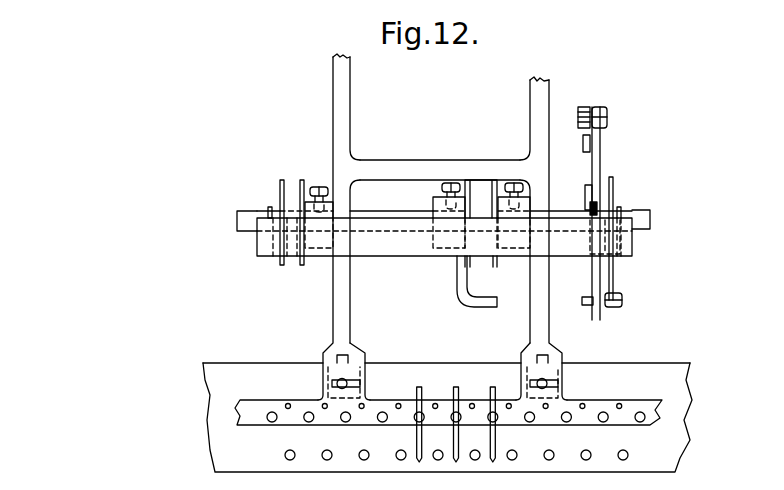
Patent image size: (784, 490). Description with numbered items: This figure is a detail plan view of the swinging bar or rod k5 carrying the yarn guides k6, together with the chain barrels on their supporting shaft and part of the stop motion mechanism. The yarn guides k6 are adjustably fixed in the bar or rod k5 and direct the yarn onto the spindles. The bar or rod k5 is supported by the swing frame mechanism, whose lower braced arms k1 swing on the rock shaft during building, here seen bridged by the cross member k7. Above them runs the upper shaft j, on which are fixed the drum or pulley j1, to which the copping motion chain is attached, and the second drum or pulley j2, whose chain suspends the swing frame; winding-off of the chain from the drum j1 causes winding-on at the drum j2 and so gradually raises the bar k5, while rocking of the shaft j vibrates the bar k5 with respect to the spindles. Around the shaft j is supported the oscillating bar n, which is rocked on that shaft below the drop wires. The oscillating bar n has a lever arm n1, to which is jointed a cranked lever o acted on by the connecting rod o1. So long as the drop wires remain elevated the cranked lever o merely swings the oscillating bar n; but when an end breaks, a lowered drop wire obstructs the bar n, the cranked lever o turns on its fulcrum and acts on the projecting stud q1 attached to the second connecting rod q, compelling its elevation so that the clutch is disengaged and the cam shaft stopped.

The lower braced arms k1 is at (343, 104).
The cross bar connecting standards k7 is at (401, 144).
The upper shaft j is at (385, 216).
The oscillating bar n is at (378, 250).
The drum or pulley j1 is at (480, 188).
The second drum or pulley j2 is at (290, 190).
The cranked lever o is at (603, 139).
The connecting rod o1 is at (583, 142).
The projecting stud q1 is at (585, 208).
The connecting rod q is at (586, 242).
The lever arm n1 is at (614, 277).
The bar or rod carrying the yarn guides k5 is at (632, 398).
The yarn guides k6 is at (412, 438).